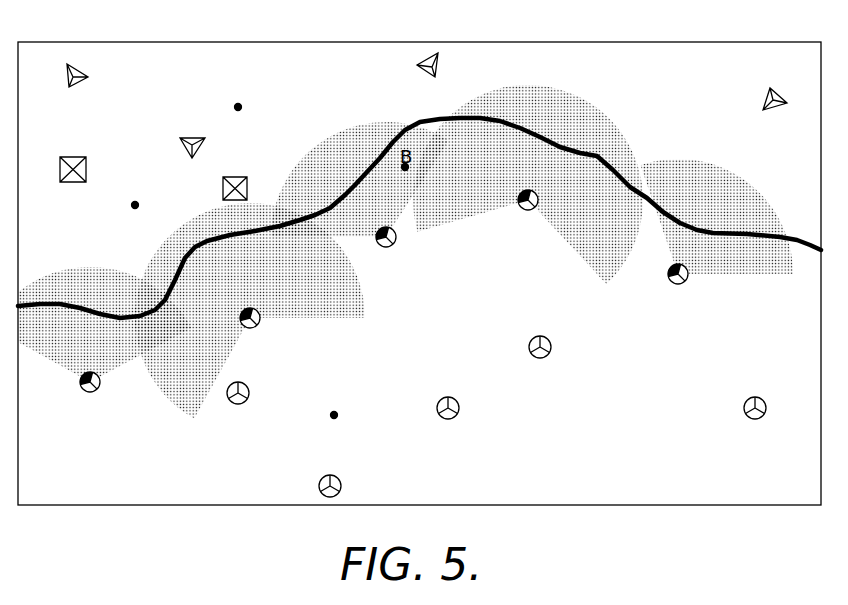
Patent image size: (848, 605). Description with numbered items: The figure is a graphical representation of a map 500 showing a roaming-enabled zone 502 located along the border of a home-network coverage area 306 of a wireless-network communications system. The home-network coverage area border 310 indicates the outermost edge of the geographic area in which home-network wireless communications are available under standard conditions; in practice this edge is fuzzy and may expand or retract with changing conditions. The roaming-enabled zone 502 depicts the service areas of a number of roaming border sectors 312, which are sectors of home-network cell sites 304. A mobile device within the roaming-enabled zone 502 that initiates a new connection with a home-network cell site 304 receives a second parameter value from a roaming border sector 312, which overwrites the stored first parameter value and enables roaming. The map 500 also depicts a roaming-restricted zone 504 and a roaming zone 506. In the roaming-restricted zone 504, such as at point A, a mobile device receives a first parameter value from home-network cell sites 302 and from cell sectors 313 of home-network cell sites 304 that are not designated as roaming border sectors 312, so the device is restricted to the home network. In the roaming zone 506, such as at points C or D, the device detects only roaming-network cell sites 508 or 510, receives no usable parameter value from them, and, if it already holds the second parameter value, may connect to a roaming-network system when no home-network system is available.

The map 500 is at (358, 42).
The roaming-enabled zone 502 is at (316, 165).
The roaming-restricted zone 504 is at (360, 360).
The roaming zone 506 is at (162, 114).
The roaming-network cell site 508 is at (438, 61).
The roaming-network cell site 510 is at (66, 160).
The home-network cell site 302 is at (228, 402).
The home-network cell site 304 is at (411, 299).
The home-network coverage area 306 is at (612, 458).
The home-network coverage area border 310 is at (640, 190).
The roaming border sector 312 is at (518, 194).
The cell sector 313 is at (524, 210).